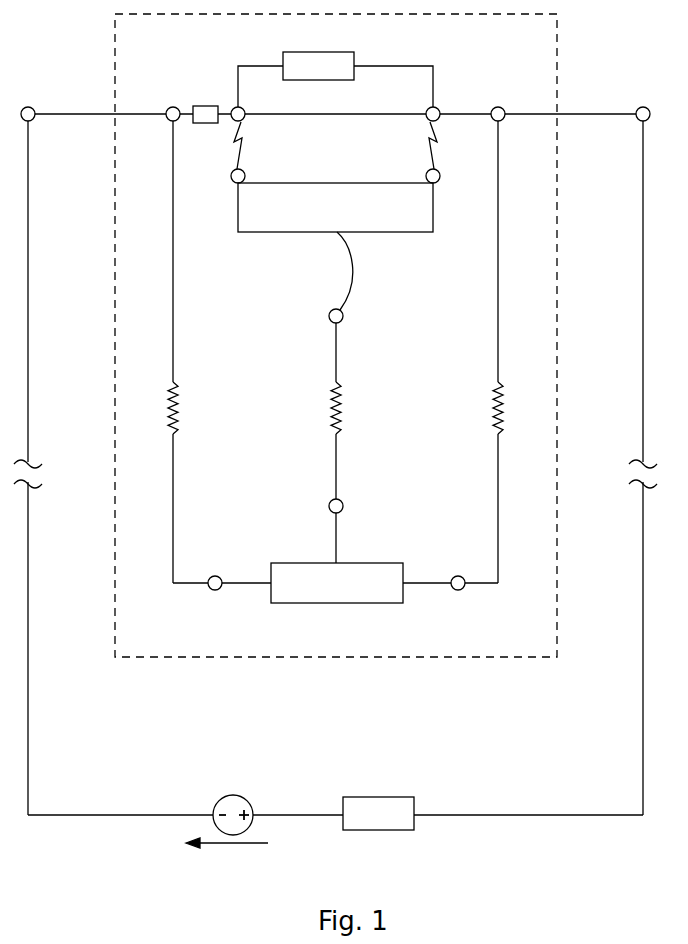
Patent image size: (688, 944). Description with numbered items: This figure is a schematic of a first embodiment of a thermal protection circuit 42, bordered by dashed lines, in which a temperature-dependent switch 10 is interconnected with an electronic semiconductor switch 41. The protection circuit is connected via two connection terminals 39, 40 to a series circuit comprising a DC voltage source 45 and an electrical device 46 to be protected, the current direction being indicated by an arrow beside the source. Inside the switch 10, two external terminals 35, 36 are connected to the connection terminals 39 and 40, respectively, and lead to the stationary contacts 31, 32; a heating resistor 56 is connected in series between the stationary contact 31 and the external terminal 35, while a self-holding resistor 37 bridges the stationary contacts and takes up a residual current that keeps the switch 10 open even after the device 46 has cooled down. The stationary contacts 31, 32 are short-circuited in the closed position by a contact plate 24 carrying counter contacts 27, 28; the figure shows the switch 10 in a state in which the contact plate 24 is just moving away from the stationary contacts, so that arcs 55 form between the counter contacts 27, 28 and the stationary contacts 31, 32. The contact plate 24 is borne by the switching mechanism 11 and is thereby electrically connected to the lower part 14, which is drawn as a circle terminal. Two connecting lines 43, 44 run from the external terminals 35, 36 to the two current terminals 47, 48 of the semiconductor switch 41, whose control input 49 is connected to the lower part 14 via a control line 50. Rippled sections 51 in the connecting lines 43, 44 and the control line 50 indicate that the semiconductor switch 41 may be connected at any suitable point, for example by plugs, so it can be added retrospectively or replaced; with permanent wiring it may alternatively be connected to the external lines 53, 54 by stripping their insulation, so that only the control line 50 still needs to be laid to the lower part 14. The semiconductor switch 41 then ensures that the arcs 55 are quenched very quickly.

The temperature-dependent switch 10 is at (359, 335).
The switching mechanism 11 is at (356, 288).
The lower part 14 is at (329, 316).
The contact plate 24 is at (390, 222).
The counter contact 27 is at (233, 181).
The counter contact 28 is at (439, 181).
The stationary contact 31 is at (236, 107).
The stationary contact 32 is at (437, 107).
The external terminal 35 is at (173, 106).
The external terminal 36 is at (498, 106).
The self-holding resistor 37 is at (320, 60).
The connection terminal 39 is at (28, 106).
The connection terminal 40 is at (643, 106).
The electronic semiconductor switch 41 is at (354, 562).
The thermal protection circuit 42 is at (558, 283).
The connecting line 43 is at (174, 452).
The connecting line 44 is at (498, 457).
The DC voltage source 45 is at (232, 846).
The electrical device 46 is at (373, 828).
The current terminal 47 is at (212, 590).
The current terminal 48 is at (462, 590).
The control input 49 is at (329, 506).
The control line 50 is at (336, 468).
The rippled section 51 is at (179, 388).
The external line 53 is at (29, 725).
The external line 54 is at (642, 730).
The arc 55 is at (246, 141).
The heating resistor 56 is at (205, 105).